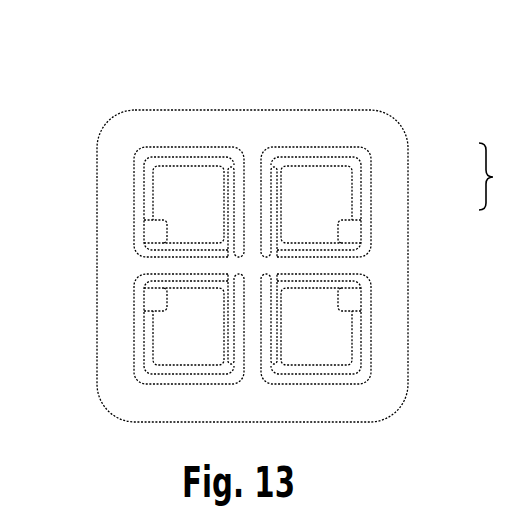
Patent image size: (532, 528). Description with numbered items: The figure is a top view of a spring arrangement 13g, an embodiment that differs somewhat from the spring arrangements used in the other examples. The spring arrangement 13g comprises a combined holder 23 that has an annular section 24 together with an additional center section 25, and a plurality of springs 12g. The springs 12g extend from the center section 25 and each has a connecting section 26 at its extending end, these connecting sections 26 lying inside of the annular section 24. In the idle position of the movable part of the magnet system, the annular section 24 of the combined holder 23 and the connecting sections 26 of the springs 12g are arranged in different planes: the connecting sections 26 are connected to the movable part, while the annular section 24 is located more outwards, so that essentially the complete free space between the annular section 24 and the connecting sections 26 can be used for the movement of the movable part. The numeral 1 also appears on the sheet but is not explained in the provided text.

The spring arrangement 13g is at (247, 233).
The springs 12g is at (253, 225).
The annular section 24 is at (383, 142).
The center section 25 is at (253, 265).
The combined holder 23 is at (505, 176).
The connecting section 26 is at (155, 230).
The device 1 is at (524, 50).